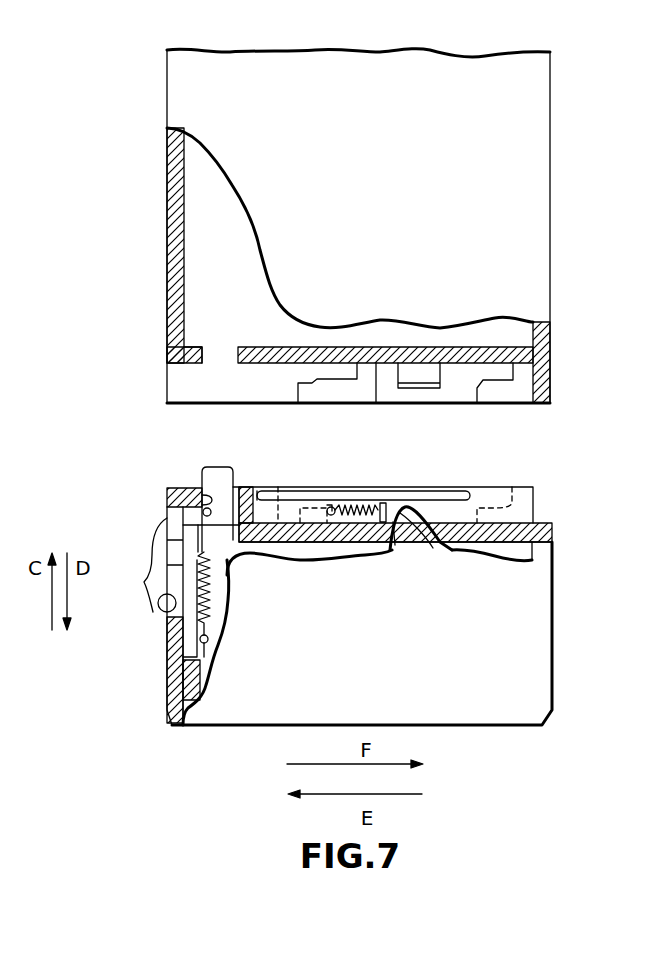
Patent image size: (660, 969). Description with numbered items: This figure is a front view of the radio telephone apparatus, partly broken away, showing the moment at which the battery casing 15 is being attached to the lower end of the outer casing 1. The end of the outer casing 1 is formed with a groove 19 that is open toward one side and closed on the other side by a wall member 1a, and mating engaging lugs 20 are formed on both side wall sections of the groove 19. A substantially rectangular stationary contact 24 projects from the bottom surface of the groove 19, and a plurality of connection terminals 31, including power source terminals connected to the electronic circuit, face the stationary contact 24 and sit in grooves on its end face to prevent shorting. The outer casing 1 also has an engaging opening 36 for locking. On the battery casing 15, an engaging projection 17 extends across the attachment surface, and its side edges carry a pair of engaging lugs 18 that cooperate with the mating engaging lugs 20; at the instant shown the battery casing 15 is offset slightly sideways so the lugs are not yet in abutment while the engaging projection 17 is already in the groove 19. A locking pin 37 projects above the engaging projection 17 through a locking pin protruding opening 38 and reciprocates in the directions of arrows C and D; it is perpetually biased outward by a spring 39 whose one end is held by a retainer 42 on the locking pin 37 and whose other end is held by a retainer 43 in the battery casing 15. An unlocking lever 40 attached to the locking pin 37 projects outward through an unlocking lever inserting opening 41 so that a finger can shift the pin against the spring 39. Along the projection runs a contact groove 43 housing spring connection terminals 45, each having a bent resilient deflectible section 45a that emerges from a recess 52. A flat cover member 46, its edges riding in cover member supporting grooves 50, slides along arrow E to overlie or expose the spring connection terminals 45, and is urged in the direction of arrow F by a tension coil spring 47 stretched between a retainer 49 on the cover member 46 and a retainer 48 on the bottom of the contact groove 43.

The outer casing 1 is at (535, 197).
The wall member 1a is at (550, 403).
The groove 19 is at (205, 392).
The mating engaging lugs 20 is at (344, 393).
The stationary contact 24 is at (416, 378).
The connection terminals 31 is at (449, 358).
The engaging opening 36 is at (207, 363).
The battery casing 15 is at (552, 665).
The engaging projection 17 is at (168, 490).
The engaging lugs 18 is at (296, 490).
The locking pin 37 is at (203, 478).
The locking pin protruding opening 38 is at (200, 500).
The spring 39 is at (198, 627).
The unlocking lever 40 is at (152, 585).
The unlocking lever inserting opening 41 is at (162, 609).
The retainer 42 is at (201, 516).
The contact groove 43 is at (182, 693).
The spring connection terminals 45 is at (437, 550).
The bent resilient deflectible section 45a is at (425, 552).
The cover member 46 is at (417, 496).
The tension coil spring 47 is at (350, 517).
The retainer 48 is at (383, 520).
The retainer 49 is at (327, 514).
The cover member supporting grooves 50 is at (265, 497).
The recess 52 is at (400, 552).